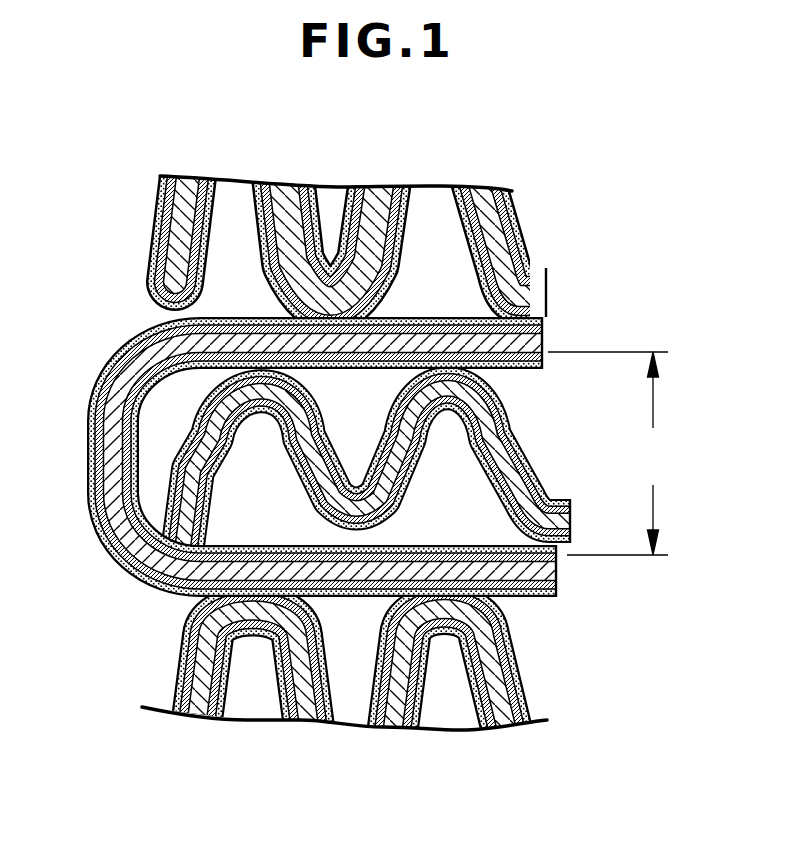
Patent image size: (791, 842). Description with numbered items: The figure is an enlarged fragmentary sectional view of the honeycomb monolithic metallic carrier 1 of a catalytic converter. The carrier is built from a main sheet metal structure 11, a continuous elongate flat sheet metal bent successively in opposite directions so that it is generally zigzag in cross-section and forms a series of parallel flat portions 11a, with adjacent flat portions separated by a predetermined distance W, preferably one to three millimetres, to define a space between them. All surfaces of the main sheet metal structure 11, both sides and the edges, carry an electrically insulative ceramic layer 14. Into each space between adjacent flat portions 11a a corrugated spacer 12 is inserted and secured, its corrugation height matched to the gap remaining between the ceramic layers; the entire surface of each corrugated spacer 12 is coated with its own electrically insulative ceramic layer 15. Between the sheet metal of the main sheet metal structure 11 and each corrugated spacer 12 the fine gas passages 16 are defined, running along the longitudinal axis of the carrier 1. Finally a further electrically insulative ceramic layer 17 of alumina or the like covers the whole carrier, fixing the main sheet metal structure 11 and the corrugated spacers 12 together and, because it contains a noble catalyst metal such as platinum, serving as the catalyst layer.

The honeycomb monolithic metallic carrier 1 is at (344, 433).
The main sheet metal structure 11 is at (127, 521).
The flat portion 11a is at (532, 340).
The corrugated spacer 12 is at (500, 224).
The electrically insulative ceramic layer 14 is at (341, 444).
The electrically insulative ceramic layer 15 is at (405, 190).
The gas passage 16 is at (223, 253).
The electrically insulative ceramic layer 17 is at (150, 323).